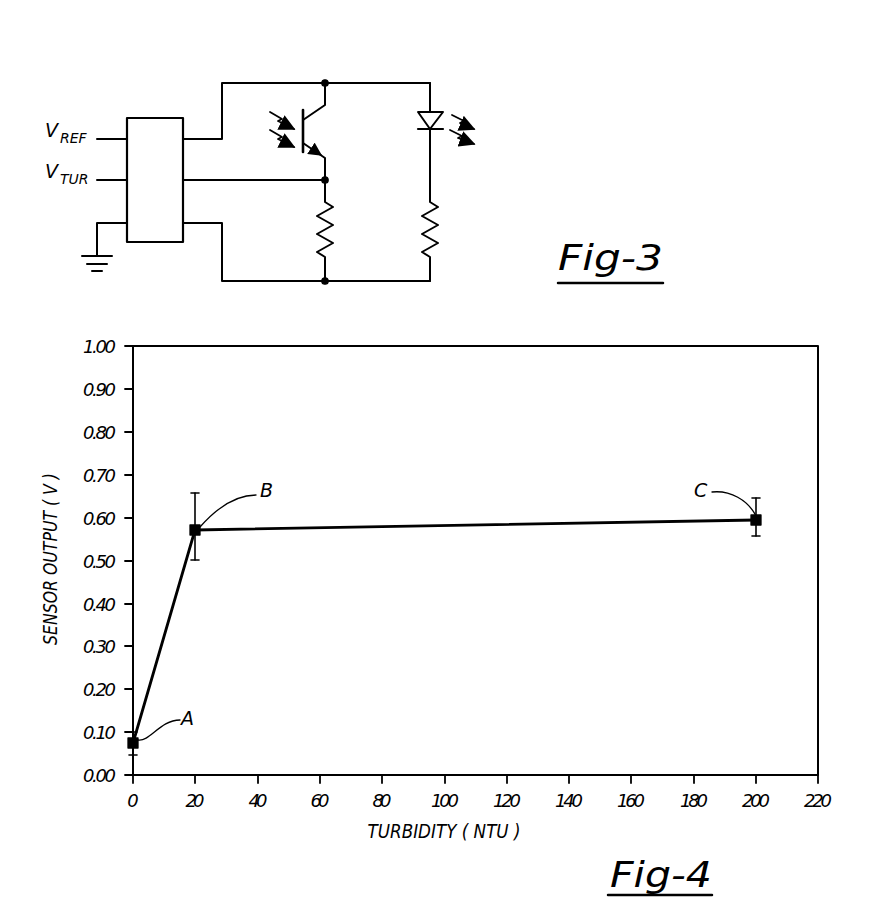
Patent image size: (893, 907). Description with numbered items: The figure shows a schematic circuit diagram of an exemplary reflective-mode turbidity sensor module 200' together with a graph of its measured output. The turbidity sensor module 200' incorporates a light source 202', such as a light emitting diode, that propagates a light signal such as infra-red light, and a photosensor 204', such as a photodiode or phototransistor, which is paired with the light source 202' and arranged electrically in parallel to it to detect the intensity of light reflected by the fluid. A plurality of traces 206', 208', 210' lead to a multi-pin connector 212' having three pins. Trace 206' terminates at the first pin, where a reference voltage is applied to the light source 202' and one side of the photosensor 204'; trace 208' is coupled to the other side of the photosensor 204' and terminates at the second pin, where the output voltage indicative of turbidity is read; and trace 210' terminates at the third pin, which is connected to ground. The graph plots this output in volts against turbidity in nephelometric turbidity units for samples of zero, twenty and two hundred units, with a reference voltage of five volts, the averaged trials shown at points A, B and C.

The multi-pin connector 212' is at (157, 154).
The trace 206' is at (244, 99).
The photosensor 204' is at (281, 164).
The light source 202' is at (469, 170).
The trace 208' is at (254, 208).
The trace 210' is at (236, 257).
The turbidity sensor module 200' is at (331, 182).